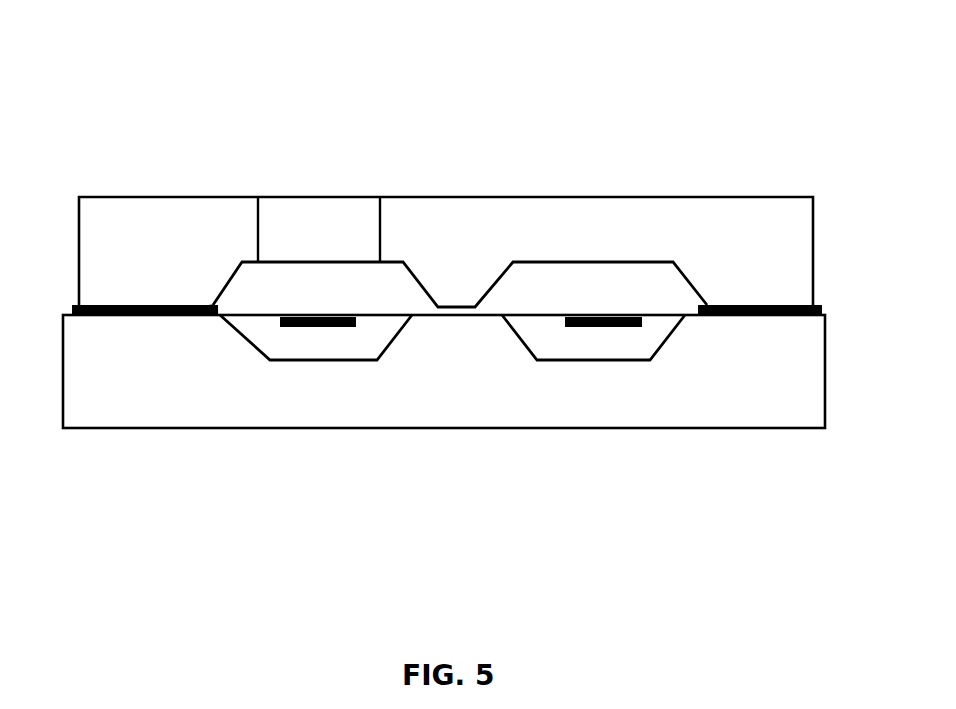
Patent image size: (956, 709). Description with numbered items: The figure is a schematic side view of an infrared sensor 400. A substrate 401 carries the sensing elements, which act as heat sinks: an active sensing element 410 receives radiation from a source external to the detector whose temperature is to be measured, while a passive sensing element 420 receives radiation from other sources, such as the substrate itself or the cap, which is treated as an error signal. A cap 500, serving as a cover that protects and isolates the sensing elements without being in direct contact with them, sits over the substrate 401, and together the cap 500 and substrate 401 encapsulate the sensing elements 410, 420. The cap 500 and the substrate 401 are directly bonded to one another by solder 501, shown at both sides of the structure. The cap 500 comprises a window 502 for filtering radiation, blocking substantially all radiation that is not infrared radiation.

The semiconductor device 400 is at (126, 157).
The substrate 401 is at (444, 371).
The active sensing element 410 is at (307, 327).
The passive sensing element 420 is at (585, 327).
The cap 500 is at (446, 252).
The solder 501 is at (122, 315).
The window 502 is at (320, 220).